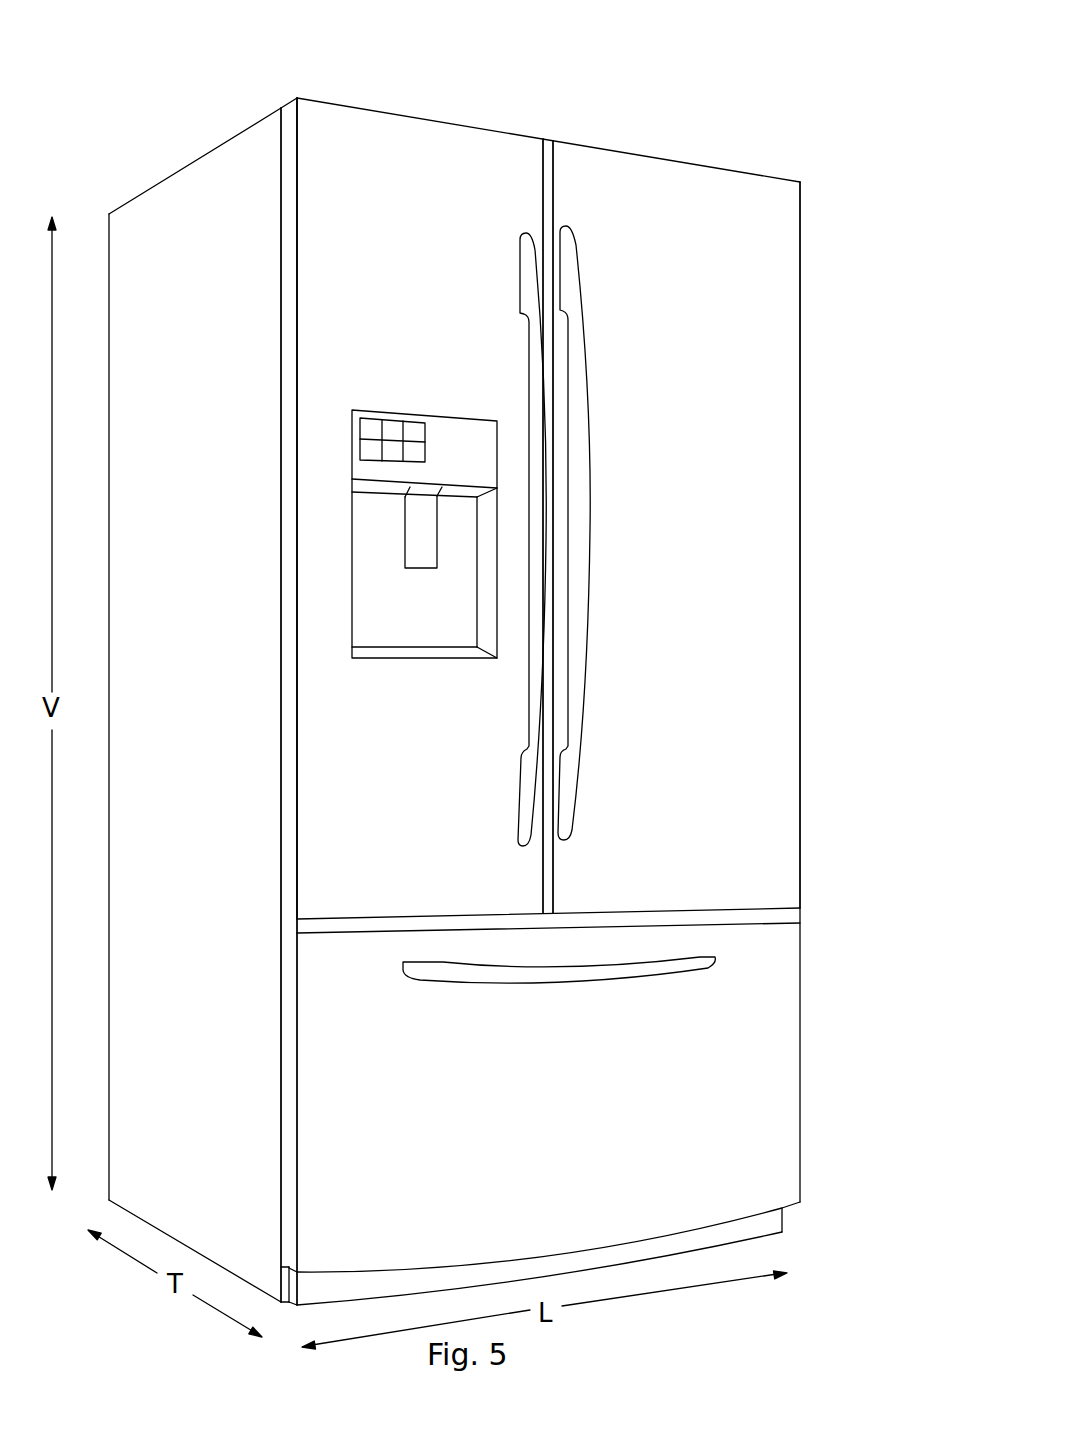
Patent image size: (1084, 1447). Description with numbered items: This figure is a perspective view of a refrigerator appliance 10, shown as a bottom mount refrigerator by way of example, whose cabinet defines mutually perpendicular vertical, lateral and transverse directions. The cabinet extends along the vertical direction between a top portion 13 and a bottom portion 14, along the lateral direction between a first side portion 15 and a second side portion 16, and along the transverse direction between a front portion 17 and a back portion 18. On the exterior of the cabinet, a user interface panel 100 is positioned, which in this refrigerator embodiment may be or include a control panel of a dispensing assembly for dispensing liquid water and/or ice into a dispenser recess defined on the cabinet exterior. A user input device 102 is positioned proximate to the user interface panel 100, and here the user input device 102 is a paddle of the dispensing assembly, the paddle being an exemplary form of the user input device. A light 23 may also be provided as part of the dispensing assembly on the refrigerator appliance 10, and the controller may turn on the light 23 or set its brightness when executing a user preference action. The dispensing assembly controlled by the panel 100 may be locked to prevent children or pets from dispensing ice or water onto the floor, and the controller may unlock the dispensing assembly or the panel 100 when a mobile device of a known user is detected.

The refrigerator appliance 10 is at (702, 135).
The top portion 13 is at (808, 178).
The bottom portion 14 is at (808, 1190).
The first side portion 15 is at (228, 487).
The second side portion 16 is at (806, 650).
The front portion 17 is at (284, 108).
The back portion 18 is at (109, 206).
The light 23 is at (372, 487).
The user interface panel 100 is at (446, 447).
The user input device 102 is at (393, 433).